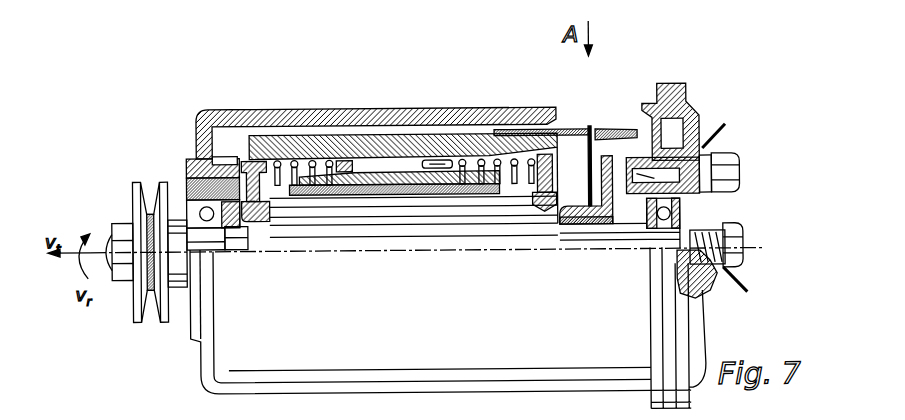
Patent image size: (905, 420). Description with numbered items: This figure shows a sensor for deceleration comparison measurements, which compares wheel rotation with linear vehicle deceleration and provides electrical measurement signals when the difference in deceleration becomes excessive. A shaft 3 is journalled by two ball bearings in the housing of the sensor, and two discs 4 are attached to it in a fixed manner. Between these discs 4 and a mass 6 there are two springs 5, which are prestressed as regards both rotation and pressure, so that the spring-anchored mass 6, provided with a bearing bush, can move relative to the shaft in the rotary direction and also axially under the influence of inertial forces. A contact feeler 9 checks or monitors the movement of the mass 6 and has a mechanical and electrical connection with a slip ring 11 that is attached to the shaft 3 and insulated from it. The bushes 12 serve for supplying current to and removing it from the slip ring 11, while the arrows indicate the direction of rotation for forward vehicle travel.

The shaft 3 is at (237, 231).
The discs 4 is at (540, 177).
The springs 5 is at (443, 157).
The mass 6 is at (467, 133).
The contact feeler 9 is at (596, 128).
The slip ring 11 is at (610, 155).
The bushes 12 is at (700, 219).